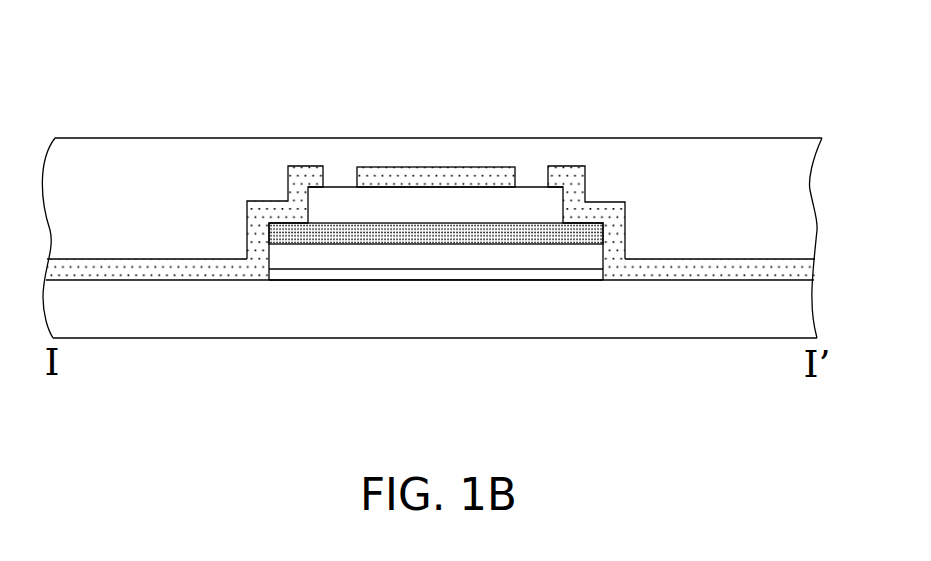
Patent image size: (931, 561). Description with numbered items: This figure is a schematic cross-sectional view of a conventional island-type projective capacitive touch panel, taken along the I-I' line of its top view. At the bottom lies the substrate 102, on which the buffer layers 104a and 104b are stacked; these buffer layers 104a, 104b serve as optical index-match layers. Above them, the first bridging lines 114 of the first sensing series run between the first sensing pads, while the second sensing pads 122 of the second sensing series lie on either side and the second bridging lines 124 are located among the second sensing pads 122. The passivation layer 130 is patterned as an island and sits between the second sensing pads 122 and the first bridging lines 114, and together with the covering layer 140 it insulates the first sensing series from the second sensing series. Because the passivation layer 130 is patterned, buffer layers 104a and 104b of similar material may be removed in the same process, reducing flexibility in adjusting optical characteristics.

The substrate 102 is at (737, 322).
The buffer layer 104a is at (513, 275).
The buffer layer 104b is at (588, 263).
The first bridging line 114 is at (440, 175).
The second sensing pad 122 is at (163, 267).
The second bridging line 124 is at (595, 226).
The passivation layer 130 is at (533, 202).
The covering layer 140 is at (763, 160).